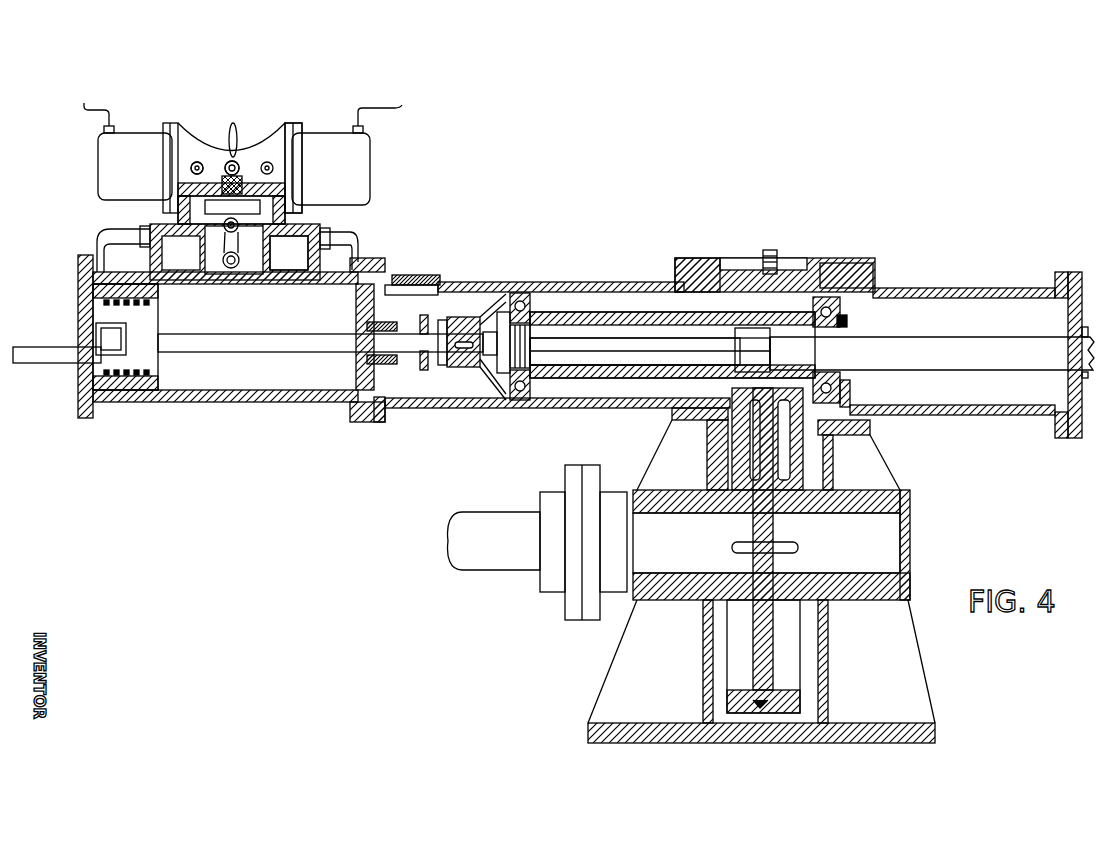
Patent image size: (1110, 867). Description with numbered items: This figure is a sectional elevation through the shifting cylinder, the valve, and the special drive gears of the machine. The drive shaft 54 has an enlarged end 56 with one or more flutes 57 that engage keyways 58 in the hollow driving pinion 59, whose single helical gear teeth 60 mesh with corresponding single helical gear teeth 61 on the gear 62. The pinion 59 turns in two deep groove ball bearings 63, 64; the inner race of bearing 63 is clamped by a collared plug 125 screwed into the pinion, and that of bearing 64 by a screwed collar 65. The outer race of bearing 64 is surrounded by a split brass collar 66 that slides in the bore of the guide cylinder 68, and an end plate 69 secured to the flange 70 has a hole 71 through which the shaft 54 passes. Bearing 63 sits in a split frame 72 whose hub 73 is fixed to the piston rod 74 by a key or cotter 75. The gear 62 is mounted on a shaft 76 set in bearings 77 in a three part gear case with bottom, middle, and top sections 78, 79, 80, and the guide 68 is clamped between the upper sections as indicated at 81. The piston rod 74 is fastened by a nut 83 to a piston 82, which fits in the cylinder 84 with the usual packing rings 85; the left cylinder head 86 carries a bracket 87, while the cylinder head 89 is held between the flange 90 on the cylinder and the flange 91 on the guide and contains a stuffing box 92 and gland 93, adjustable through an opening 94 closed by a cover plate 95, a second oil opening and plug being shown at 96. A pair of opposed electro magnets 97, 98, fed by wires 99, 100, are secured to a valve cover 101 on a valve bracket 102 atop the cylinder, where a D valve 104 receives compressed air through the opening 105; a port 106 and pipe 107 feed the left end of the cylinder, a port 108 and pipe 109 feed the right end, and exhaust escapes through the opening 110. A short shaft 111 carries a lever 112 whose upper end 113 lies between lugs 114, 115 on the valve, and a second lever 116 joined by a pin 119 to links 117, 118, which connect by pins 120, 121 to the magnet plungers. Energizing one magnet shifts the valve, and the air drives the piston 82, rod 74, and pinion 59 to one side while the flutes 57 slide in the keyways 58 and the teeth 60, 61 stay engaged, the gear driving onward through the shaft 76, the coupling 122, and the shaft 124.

The drive shaft 54 is at (932, 353).
The enlarged end 56 is at (760, 316).
The flutes 57 is at (770, 352).
The keyways 58 is at (612, 348).
The hollow driving pinion 59 is at (588, 312).
The single helical gear teeth 60 is at (558, 312).
The single helical gear teeth 61 is at (778, 712).
The gear 62 is at (748, 675).
The ball bearing 63 is at (520, 292).
The ball bearing 64 is at (828, 296).
The screwed collar 65 is at (848, 320).
The split brass collar 66 is at (873, 280).
The guide cylinder 68 is at (1010, 288).
The end plate 69 is at (1082, 340).
The flange 70 is at (1062, 272).
The hole 71 is at (1087, 326).
The split frame 72 is at (490, 312).
The hub 73 is at (462, 316).
The piston rod 74 is at (464, 350).
The key or cotter 75 is at (504, 375).
The shaft 76 is at (771, 545).
The bearings 77 is at (672, 575).
The bottom section 78 is at (828, 696).
The middle section 79 is at (833, 468).
The top section 80 is at (742, 258).
The clamping point 81 is at (700, 258).
The piston 82 is at (160, 365).
The nut 83 is at (110, 340).
The cylinder 84 is at (282, 402).
The packing rings 85 is at (130, 392).
The left cylinder head 86 is at (85, 340).
The bracket 87 is at (30, 364).
The cylinder head 89 is at (356, 372).
The flange 90 is at (355, 420).
The flange 91 is at (378, 422).
The stuffing box 92 is at (368, 323).
The gland 93 is at (423, 371).
The opening 94 is at (412, 285).
The cover plate 95 is at (425, 274).
The opening and plug 96 is at (774, 250).
The electro magnet 97 is at (98, 183).
The electro magnet 98 is at (370, 165).
The wire 99 is at (89, 103).
The wire 100 is at (399, 103).
The valve cover 101 is at (222, 180).
The valve bracket 102 is at (330, 252).
The D valve 104 is at (180, 200).
The opening 105 is at (240, 170).
The port 106 is at (195, 270).
The pipe 107 is at (118, 234).
The port 108 is at (275, 272).
The pipe 109 is at (343, 228).
The exhaust opening 110 is at (222, 258).
The short shaft 111 is at (231, 269).
The lever 112 is at (238, 262).
The upper end 113 is at (244, 188).
The lug 114 is at (160, 248).
The lug 115 is at (262, 208).
The second lever 116 is at (235, 165).
The link 117 is at (200, 156).
The link 118 is at (296, 150).
The pin 119 is at (236, 160).
The pin 120 is at (190, 167).
The pin 121 is at (273, 165).
The coupling 122 is at (577, 608).
The shaft 124 is at (462, 534).
The collared plug 125 is at (522, 400).